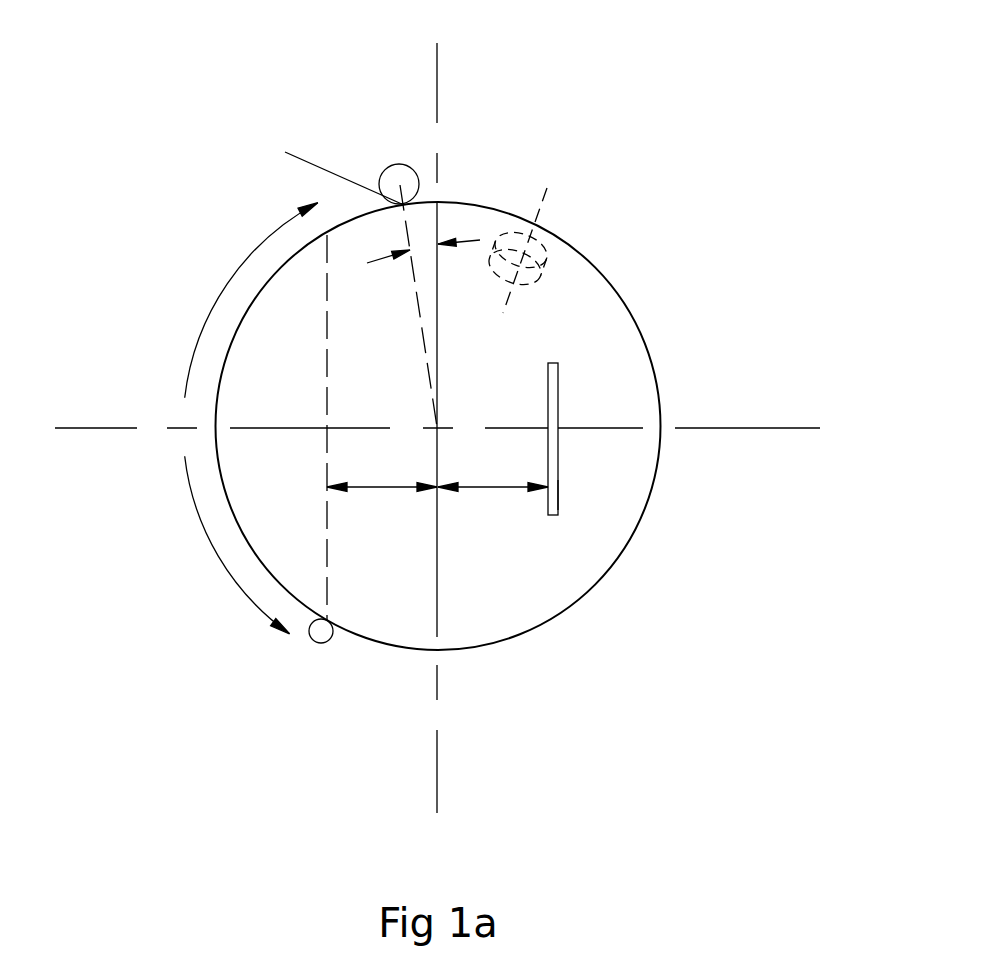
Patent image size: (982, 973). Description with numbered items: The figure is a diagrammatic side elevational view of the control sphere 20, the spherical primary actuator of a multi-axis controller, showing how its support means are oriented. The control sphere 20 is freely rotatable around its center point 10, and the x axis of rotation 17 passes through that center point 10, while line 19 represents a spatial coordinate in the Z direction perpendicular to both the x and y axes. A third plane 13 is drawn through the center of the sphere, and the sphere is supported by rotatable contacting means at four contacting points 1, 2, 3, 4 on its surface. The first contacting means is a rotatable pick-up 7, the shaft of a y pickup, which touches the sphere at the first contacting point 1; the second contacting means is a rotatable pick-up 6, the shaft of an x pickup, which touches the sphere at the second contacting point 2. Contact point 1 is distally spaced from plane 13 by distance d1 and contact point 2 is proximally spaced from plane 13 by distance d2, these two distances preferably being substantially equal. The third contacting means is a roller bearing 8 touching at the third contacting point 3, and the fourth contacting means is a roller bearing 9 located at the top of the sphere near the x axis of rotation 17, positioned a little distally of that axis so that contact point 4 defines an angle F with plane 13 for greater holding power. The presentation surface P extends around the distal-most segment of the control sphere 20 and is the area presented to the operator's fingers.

The first contacting point 1 is at (330, 620).
The second contacting point 2 is at (560, 427).
The third contacting point 3 is at (517, 282).
The fourth contacting point 4 is at (333, 160).
The rotatable pick-up 6 is at (560, 493).
The rotatable pick-up 7 is at (306, 650).
The roller bearing 8 is at (553, 257).
The roller bearing 9 is at (388, 163).
The center point 10 is at (440, 423).
The third plane 13 is at (443, 570).
The x axis of rotation 17 is at (440, 52).
The line 19 is at (78, 440).
The control sphere 20 is at (573, 612).
The presentation surface P is at (185, 357).
The angle F is at (409, 279).
The distance d1 is at (382, 427).
The distance d2 is at (493, 516).